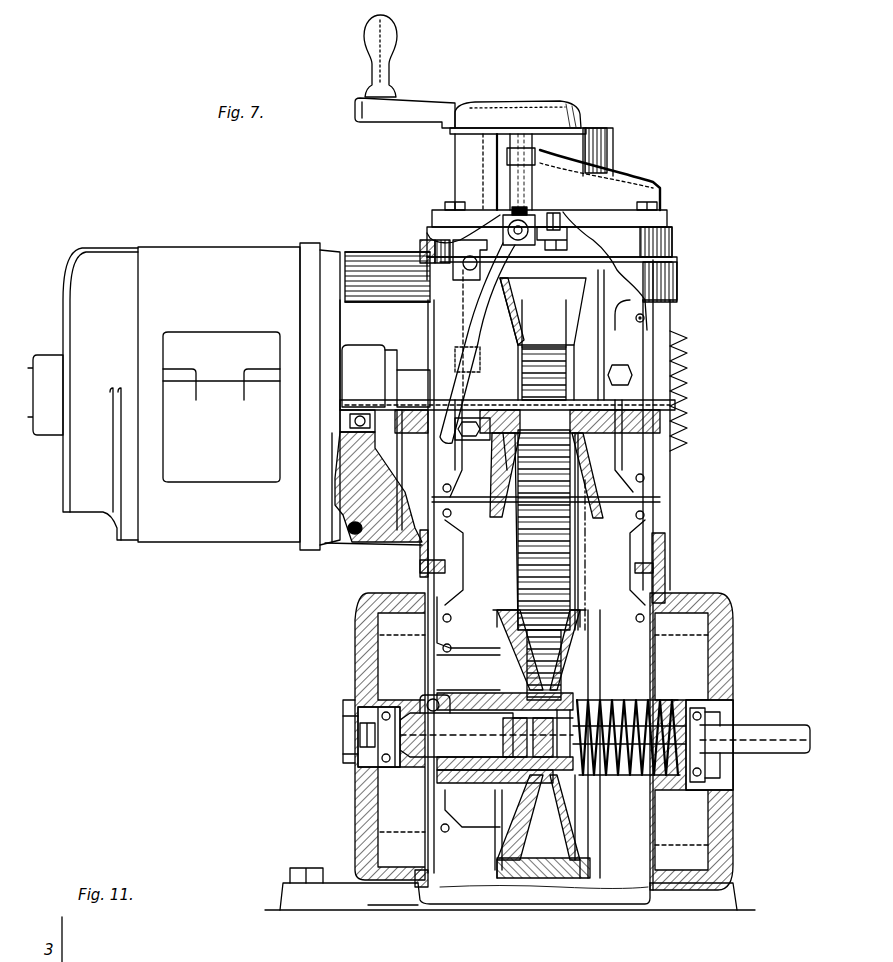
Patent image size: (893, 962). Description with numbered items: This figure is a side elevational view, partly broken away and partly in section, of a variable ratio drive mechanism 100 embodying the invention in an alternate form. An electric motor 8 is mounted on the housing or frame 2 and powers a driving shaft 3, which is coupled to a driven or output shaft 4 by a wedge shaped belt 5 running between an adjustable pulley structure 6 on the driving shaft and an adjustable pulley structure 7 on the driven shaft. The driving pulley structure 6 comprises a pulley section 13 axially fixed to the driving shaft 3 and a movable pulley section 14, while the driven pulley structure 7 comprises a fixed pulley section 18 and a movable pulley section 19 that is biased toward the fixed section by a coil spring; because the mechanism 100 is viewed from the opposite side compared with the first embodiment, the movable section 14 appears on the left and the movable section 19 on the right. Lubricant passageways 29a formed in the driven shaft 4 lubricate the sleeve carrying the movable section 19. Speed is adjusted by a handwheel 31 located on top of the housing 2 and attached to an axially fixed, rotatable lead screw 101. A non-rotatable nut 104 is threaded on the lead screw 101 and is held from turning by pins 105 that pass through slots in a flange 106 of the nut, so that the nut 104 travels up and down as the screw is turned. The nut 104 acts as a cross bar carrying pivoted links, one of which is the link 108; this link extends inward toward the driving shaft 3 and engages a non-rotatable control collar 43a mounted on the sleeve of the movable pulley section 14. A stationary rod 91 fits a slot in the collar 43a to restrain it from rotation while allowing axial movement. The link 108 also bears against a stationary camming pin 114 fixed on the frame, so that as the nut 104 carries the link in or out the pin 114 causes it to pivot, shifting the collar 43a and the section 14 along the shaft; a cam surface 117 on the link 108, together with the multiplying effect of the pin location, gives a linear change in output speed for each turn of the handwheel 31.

The drive mechanism 100 is at (472, 215).
The handwheel 31 is at (534, 112).
The lead screw 101 is at (490, 180).
The nut 104 is at (527, 220).
The pins 105 is at (562, 214).
The flange 106 is at (570, 236).
The camming pin 114 is at (462, 262).
The adjustable pulley structure 6 is at (598, 268).
The movable pulley section 14 is at (520, 338).
The cam surface 117 is at (440, 295).
The stationary rod 91 is at (460, 312).
The link 108 is at (455, 331).
The driving shaft 3 is at (390, 374).
The pulley section 13 is at (605, 344).
The housing 2 is at (675, 398).
The control collar 43a is at (475, 440).
The wedge shaped belt 5 is at (527, 553).
The electric motor 8 is at (212, 528).
The lubricant passageways 29a is at (500, 706).
The pulley section 18 is at (505, 838).
The pulley section 19 is at (590, 846).
The pulley structure 7 is at (503, 880).
The driven shaft 4 is at (777, 742).